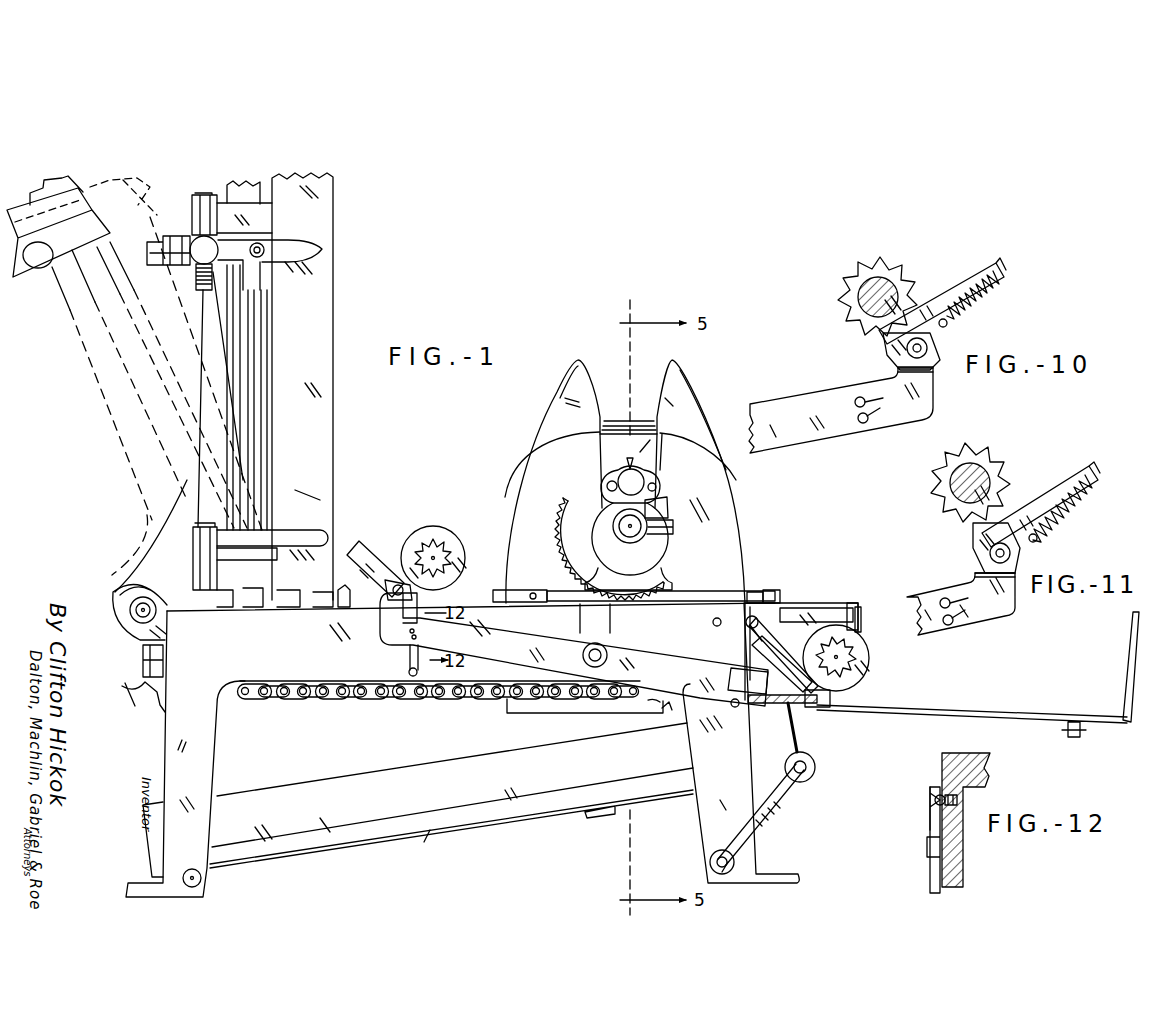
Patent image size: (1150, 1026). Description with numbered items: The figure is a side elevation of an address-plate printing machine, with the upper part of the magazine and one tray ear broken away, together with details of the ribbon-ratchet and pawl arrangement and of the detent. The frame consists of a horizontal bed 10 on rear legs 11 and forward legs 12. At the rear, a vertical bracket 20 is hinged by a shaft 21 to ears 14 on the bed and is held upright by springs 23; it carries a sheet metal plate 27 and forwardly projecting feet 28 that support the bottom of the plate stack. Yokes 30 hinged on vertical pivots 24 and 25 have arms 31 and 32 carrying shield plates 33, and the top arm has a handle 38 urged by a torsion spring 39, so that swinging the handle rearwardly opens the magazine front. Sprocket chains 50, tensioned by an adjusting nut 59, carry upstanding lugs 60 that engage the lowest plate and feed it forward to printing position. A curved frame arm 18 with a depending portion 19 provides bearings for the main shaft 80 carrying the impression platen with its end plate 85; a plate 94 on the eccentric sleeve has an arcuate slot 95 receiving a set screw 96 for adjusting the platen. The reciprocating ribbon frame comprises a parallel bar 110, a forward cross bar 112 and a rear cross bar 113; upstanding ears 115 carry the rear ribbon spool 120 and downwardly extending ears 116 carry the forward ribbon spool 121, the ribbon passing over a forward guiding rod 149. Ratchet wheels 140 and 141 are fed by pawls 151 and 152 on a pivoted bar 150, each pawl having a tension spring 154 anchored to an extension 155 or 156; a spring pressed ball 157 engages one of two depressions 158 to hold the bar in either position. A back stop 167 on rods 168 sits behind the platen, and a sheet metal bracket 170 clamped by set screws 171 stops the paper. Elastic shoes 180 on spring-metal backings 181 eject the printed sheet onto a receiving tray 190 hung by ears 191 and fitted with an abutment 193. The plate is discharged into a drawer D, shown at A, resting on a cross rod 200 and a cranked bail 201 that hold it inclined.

In FIG. 1, the horizontal bed 10 is at (471, 627).
In FIG. 12, the horizontal bed 10 is at (970, 757).
In FIG. 1, the rear legs 11 is at (185, 754).
In FIG. 1, the forward legs 12 is at (741, 743).
In FIG. 1, the ears 14 is at (183, 608).
In FIG. 1, the curved frame arm 18 is at (552, 415).
In FIG. 1, the depending arm portion 19 is at (652, 460).
In FIG. 1, the vertical bracket 20 is at (125, 462).
In FIG. 1, the shaft 21 is at (136, 605).
In FIG. 1, the springs 23 is at (152, 699).
In FIG. 1, the vertical pivot 24 is at (196, 218).
In FIG. 1, the vertical pivot 25 is at (240, 535).
In FIG. 1, the sheet metal plate 27 is at (232, 192).
In FIG. 1, the feet 28 is at (320, 500).
In FIG. 1, the yokes 30 is at (262, 352).
In FIG. 1, the topmost arm 31 is at (323, 250).
In FIG. 1, the arm 32 is at (310, 532).
In FIG. 1, the shield plate 33 is at (302, 386).
In FIG. 1, the handle 38 is at (204, 250).
In FIG. 1, the torsion spring 39 is at (196, 284).
In FIG. 1, the sprocket chains 50 is at (490, 699).
In FIG. 1, the adjusting nut 59 is at (165, 662).
In FIG. 1, the upstanding lugs 60 is at (333, 700).
In FIG. 1, the main shaft 80 is at (668, 507).
In FIG. 1, the end plate 85 is at (662, 538).
In FIG. 1, the plate 94 is at (660, 483).
In FIG. 1, the arcuate slot 95 is at (607, 484).
In FIG. 1, the set screw 96 is at (624, 470).
In FIG. 1, the parallel bar 110 is at (825, 603).
In FIG. 1, the forward cross bar 112 is at (820, 608).
In FIG. 1, the rear cross bar 113 is at (375, 598).
In FIG. 1, the upstanding ears 115 is at (540, 592).
In FIG. 1, the downwardly extending ears 116 is at (861, 623).
In FIG. 1, the rear ribbon spool 120 is at (437, 540).
In FIG. 1, the forward ribbon spool 121 is at (870, 657).
In FIG. 1, the ratchet wheel 140 is at (866, 670).
In FIG. 1, the ratchet wheel 141 is at (450, 552).
In FIG. 10, the ratchet wheel 141 is at (912, 290).
In FIG. 11, the ratchet wheel 141 is at (1008, 470).
In FIG. 1, the forward guiding rod 149 is at (855, 603).
In FIG. 1, the bar 150 is at (632, 652).
In FIG. 10, the bar 150 is at (841, 410).
In FIG. 11, the bar 150 is at (1005, 618).
In FIG. 12, the bar 150 is at (930, 878).
In FIG. 1, the pawl 151 is at (396, 578).
In FIG. 10, the pawl 151 is at (940, 345).
In FIG. 11, the pawl 151 is at (1022, 545).
In FIG. 1, the pawl 152 is at (820, 706).
In FIG. 10, the tension spring 154 is at (982, 316).
In FIG. 11, the tension spring 154 is at (1058, 522).
In FIG. 1, the bar extension 155 is at (373, 553).
In FIG. 10, the bar extension 155 is at (962, 278).
In FIG. 11, the bar extension 155 is at (1035, 512).
In FIG. 1, the bar extension 156 is at (748, 682).
In FIG. 12, the spring pressed ball 157 is at (940, 795).
In FIG. 1, the depressions 158 is at (415, 634).
In FIG. 10, the depressions 158 is at (880, 404).
In FIG. 11, the depressions 158 is at (966, 602).
In FIG. 12, the depressions 158 is at (930, 805).
In FIG. 1, the adjustable back stop 167 is at (498, 592).
In FIG. 1, the rods 168 is at (385, 600).
In FIG. 1, the sheet metal bracket 170 is at (777, 590).
In FIG. 1, the set screws 171 is at (758, 583).
In FIG. 1, the elastic shoes 180 is at (562, 545).
In FIG. 1, the spring-metal backings 181 is at (577, 538).
In FIG. 1, the receiving tray 190 is at (985, 712).
In FIG. 1, the ears 191 is at (775, 628).
In FIG. 1, the upstanding abutment 193 is at (1128, 675).
In FIG. 1, the cross rod 200 is at (202, 878).
In FIG. 1, the cranked bail 201 is at (775, 815).
In FIG. 1, the clip A is at (658, 699).
In FIG. 1, the receiving drawer D is at (451, 795).